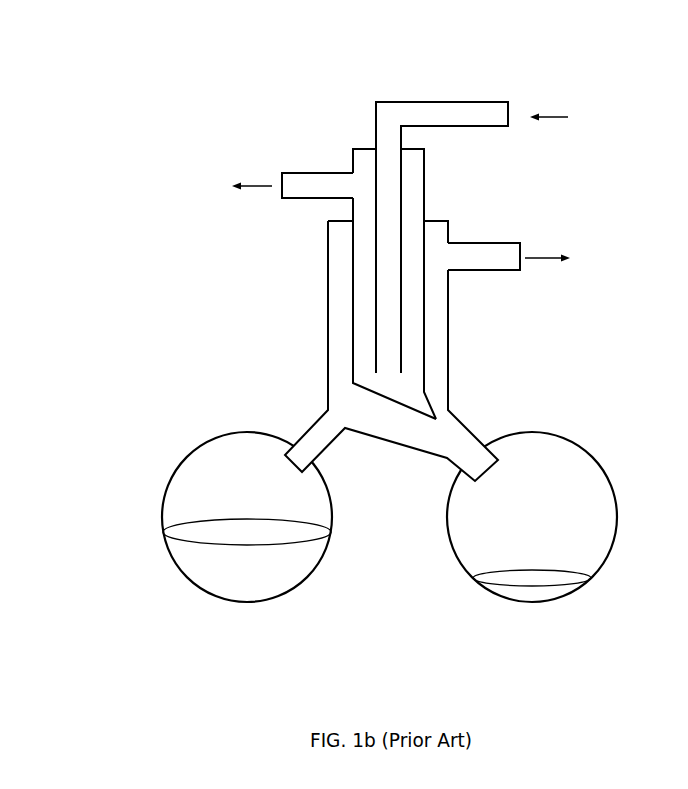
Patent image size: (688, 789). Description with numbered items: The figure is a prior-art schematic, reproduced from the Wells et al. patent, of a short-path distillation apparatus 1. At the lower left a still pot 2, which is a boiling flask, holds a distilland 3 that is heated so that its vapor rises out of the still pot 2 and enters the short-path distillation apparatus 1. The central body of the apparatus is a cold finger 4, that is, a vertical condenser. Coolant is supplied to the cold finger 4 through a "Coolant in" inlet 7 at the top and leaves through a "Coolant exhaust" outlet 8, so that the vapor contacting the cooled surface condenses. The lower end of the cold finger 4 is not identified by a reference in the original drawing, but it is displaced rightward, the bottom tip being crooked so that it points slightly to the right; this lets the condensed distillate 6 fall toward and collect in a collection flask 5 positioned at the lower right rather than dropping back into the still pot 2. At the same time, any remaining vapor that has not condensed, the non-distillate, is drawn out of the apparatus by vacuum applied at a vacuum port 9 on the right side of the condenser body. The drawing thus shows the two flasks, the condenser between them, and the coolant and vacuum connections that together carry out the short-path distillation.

The short-path distillation apparatus 1 is at (230, 51).
The still pot 2 is at (188, 458).
The distilland 3 is at (210, 578).
The cold finger 4 is at (352, 352).
The collection flask 5 is at (558, 435).
The distillate 6 is at (537, 595).
The coolant inlet 7 is at (457, 102).
The coolant exhaust outlet 8 is at (306, 173).
The vacuum port 9 is at (497, 242).